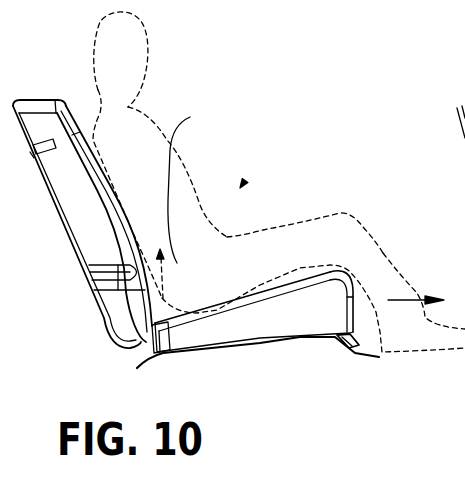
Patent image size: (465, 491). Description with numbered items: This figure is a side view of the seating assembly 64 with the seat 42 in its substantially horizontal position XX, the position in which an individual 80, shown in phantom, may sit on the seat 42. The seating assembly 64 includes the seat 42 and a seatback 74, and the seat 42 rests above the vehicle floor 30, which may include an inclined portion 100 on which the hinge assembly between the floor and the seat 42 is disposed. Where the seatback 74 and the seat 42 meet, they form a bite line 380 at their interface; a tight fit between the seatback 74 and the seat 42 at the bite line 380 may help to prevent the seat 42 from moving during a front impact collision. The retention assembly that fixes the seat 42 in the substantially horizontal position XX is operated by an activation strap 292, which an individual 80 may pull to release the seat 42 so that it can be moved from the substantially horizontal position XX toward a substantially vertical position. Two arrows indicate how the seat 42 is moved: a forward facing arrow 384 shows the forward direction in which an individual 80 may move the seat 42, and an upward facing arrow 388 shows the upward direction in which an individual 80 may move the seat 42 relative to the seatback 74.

The vehicle floor 30 is at (147, 361).
The seat 42 is at (263, 236).
The seating assembly 64 is at (222, 167).
The seatback 74 is at (85, 215).
The individual 80 is at (95, 76).
The inclined portion 100 is at (338, 348).
The activation strap 292 is at (378, 317).
The bite line 380 is at (166, 306).
The forward facing arrow 384 is at (407, 300).
The upward facing arrow 388 is at (192, 178).
The substantially horizontal position XX is at (241, 186).